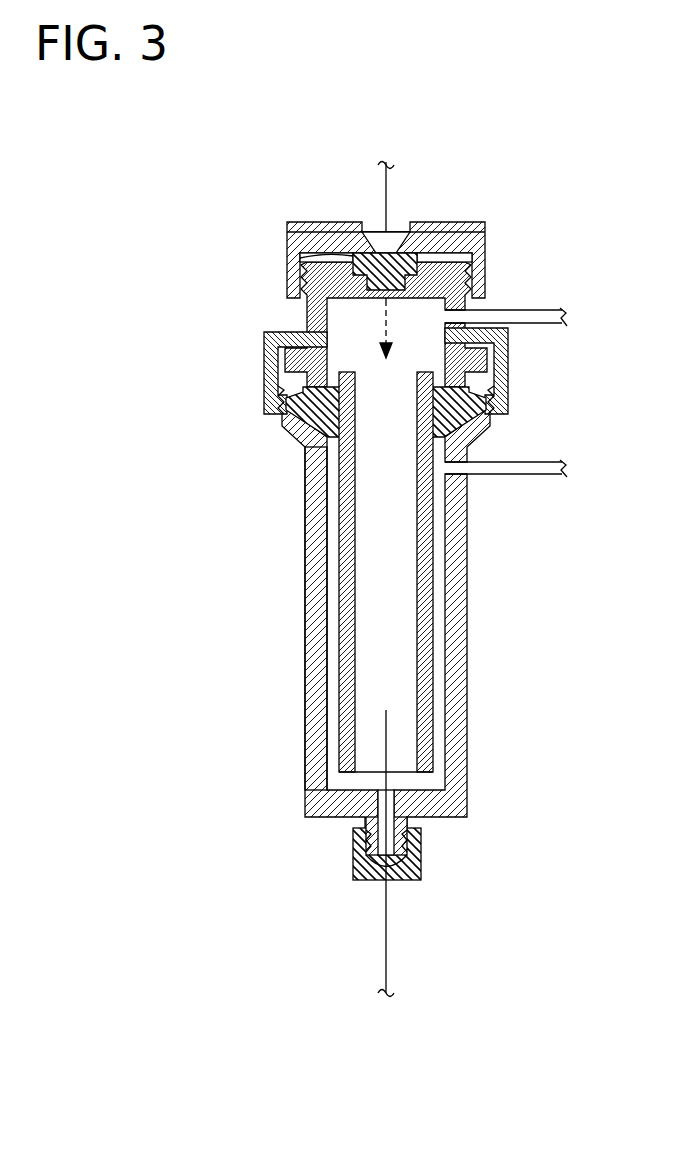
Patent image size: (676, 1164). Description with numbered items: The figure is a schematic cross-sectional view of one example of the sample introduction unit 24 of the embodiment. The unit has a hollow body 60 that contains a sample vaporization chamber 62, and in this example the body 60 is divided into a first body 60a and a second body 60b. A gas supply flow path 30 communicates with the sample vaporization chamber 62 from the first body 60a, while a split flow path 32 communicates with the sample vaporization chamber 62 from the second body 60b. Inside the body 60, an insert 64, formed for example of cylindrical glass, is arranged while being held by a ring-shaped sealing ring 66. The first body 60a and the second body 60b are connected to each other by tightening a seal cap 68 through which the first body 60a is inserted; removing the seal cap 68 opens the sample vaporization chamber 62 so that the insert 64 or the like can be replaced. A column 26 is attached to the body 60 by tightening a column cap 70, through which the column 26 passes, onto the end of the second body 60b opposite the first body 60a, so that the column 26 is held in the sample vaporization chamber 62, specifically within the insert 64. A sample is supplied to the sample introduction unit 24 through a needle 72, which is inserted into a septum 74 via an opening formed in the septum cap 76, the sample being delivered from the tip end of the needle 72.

The sample introduction unit 24 is at (247, 118).
The column 26 is at (387, 958).
The gas supply flow path 30 is at (530, 311).
The split flow path 32 is at (545, 463).
The body 60 is at (342, 557).
The first body 60a is at (307, 316).
The second body 60b is at (305, 775).
The sample vaporization chamber 62 is at (333, 748).
The insert 64 is at (340, 697).
The sealing ring 66 is at (303, 425).
The seal cap 68 is at (264, 378).
The column cap 70 is at (353, 852).
The needle 72 is at (385, 214).
The septum 74 is at (300, 258).
The septum cap 76 is at (287, 244).